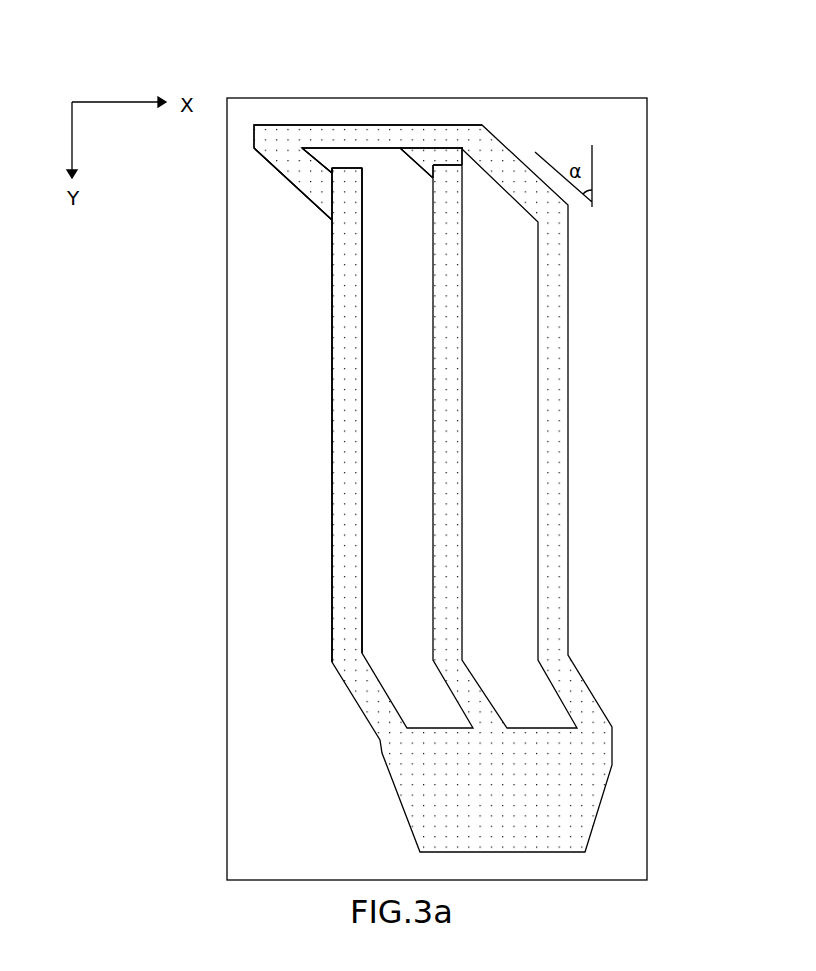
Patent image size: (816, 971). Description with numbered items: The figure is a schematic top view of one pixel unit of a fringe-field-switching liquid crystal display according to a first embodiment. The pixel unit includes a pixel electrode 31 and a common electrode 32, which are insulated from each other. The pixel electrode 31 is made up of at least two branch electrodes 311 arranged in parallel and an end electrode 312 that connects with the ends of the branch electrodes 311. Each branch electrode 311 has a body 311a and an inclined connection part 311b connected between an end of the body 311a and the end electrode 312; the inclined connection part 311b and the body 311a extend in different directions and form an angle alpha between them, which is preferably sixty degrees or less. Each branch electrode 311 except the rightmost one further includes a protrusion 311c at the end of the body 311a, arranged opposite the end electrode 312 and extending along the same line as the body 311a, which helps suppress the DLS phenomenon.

The pixel electrode 31 is at (340, 125).
The branch electrode 311 is at (85, 255).
The body 311a is at (332, 280).
The inclined connection part 311b is at (303, 195).
The protrusion 311c is at (462, 168).
The end electrode 312 is at (433, 125).
The common electrode 32 is at (590, 462).